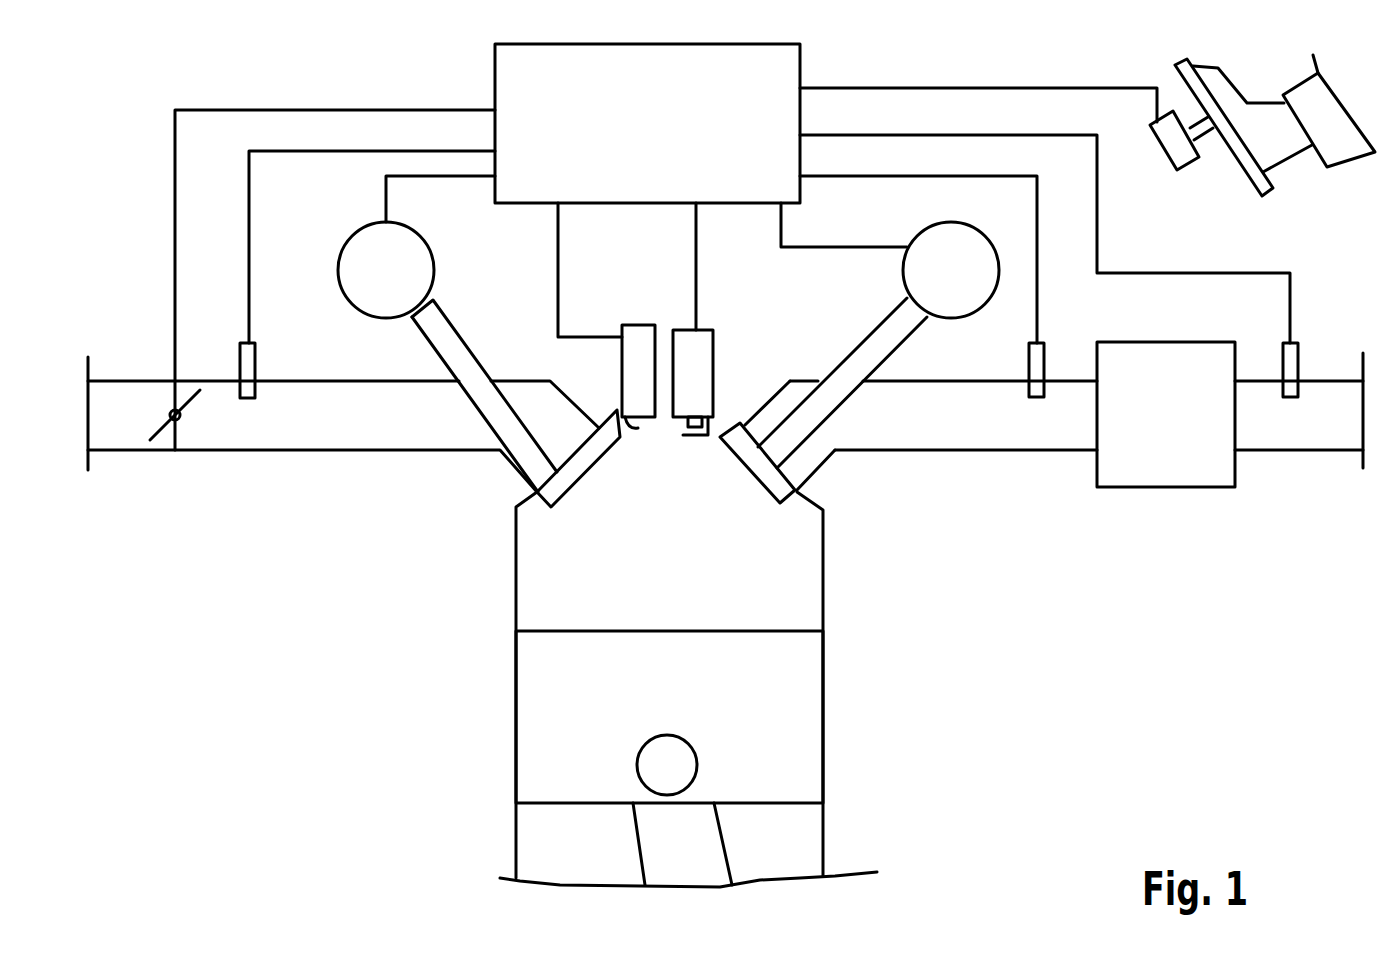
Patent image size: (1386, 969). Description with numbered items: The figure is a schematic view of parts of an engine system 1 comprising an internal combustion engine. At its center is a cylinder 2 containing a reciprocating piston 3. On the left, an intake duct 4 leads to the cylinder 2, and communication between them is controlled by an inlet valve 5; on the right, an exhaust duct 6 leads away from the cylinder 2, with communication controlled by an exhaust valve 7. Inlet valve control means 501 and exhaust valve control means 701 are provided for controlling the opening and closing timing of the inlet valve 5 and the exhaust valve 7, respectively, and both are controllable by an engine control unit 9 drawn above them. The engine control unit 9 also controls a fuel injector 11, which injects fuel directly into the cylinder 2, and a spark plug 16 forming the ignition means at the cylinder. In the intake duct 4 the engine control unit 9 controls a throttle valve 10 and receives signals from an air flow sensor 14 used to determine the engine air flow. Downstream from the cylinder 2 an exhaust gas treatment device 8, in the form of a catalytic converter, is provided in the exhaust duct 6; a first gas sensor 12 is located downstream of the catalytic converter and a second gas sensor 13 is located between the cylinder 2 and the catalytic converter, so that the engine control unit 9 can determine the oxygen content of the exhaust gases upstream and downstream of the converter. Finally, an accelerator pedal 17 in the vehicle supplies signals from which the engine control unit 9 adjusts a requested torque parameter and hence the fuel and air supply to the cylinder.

The engine system 1 is at (1120, 622).
The cylinder 2 is at (684, 587).
The piston 3 is at (684, 712).
The intake duct 4 is at (447, 437).
The inlet valve 5 is at (567, 495).
The exhaust duct 6 is at (960, 437).
The exhaust valve 7 is at (778, 505).
The exhaust gas treatment device 8 is at (1153, 432).
The engine control unit 9 is at (636, 135).
The throttle valve 10 is at (175, 450).
The fuel injector 11 is at (632, 325).
The first gas sensor 12 is at (1298, 352).
The second gas sensor 13 is at (1029, 352).
The air flow sensor 14 is at (240, 353).
The spark plug 16 is at (713, 343).
The accelerator pedal 17 is at (1230, 163).
The inlet valve control means 501 is at (338, 257).
The exhaust valve control means 701 is at (922, 232).